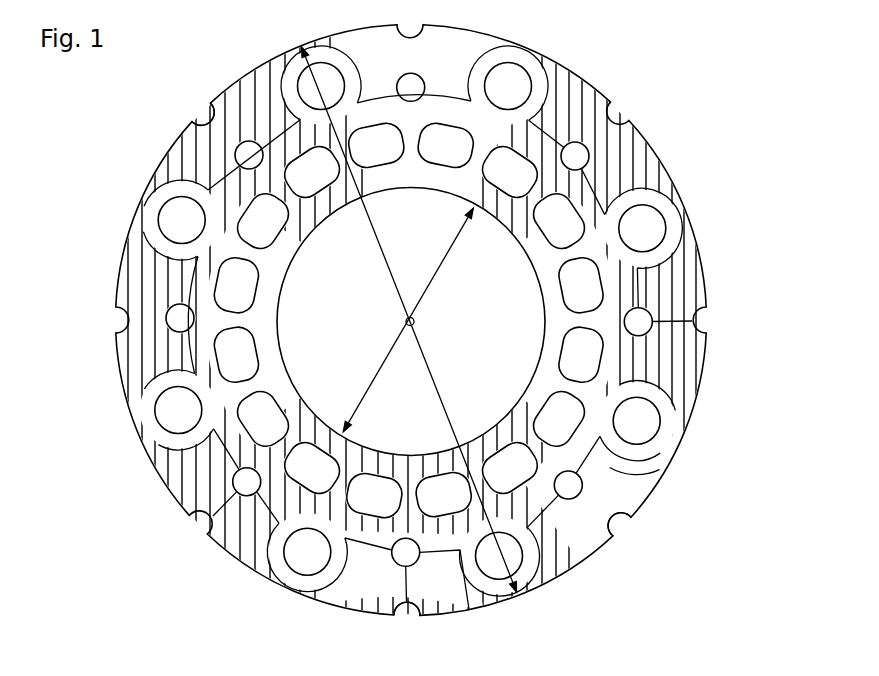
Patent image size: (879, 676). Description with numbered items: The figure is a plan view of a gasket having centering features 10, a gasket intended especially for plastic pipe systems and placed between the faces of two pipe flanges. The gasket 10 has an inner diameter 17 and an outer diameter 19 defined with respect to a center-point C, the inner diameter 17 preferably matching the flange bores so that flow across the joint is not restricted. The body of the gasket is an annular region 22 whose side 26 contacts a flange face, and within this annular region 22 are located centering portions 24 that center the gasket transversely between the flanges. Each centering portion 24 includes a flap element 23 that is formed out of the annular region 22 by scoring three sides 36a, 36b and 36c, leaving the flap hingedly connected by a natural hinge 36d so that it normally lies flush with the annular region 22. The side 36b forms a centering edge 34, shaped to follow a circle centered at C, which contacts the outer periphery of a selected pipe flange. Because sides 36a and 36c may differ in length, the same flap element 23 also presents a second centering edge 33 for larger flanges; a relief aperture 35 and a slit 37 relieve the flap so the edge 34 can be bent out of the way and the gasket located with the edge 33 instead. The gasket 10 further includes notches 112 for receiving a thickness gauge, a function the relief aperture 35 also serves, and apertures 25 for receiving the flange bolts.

The gasket having centering features 10 is at (674, 43).
The notches 112 is at (201, 104).
The inner diameter 17 is at (362, 393).
The outer diameter 19 is at (372, 236).
The center-point C is at (414, 322).
The annular region 22 is at (668, 374).
The flap element 23 is at (615, 522).
The centering portion 24 is at (566, 514).
The apertures 25 is at (155, 416).
The side 26 is at (634, 150).
The centering edge 33 is at (431, 545).
The centering edge 34 is at (521, 497).
The relief aperture 35 is at (412, 566).
The side 36a is at (540, 562).
The side 36b is at (575, 445).
The side 36c is at (625, 446).
The natural hinge 36d is at (618, 472).
The slit 37 is at (222, 540).